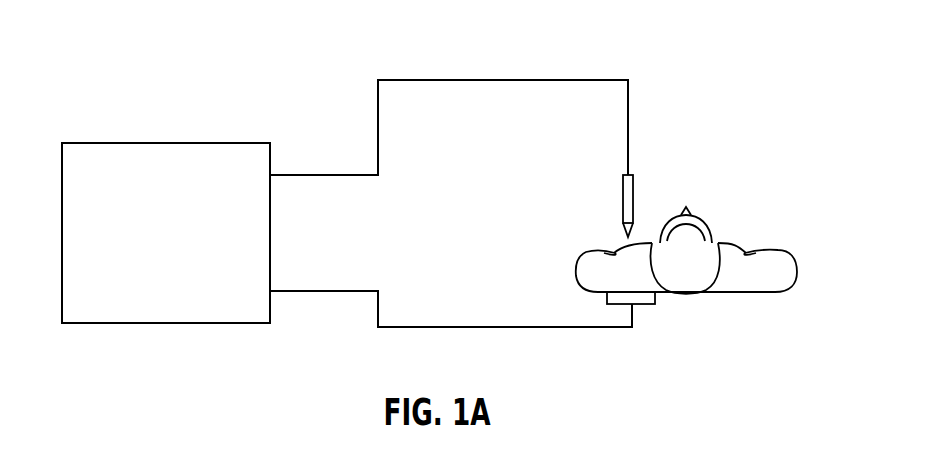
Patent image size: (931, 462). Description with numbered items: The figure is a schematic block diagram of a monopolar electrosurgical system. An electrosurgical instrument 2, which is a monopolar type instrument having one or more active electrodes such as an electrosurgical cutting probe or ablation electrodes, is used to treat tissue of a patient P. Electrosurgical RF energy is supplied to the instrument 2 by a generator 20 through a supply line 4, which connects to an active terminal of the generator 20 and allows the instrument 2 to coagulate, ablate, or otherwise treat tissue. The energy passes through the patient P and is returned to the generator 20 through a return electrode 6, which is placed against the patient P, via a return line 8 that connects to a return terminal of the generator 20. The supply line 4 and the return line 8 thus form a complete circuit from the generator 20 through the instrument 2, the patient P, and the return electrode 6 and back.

The generator 20 is at (93, 143).
The supply line 4 is at (503, 79).
The electrosurgical instrument 2 is at (621, 203).
The patient P is at (760, 240).
The return electrode 6 is at (645, 304).
The return line 8 is at (520, 327).